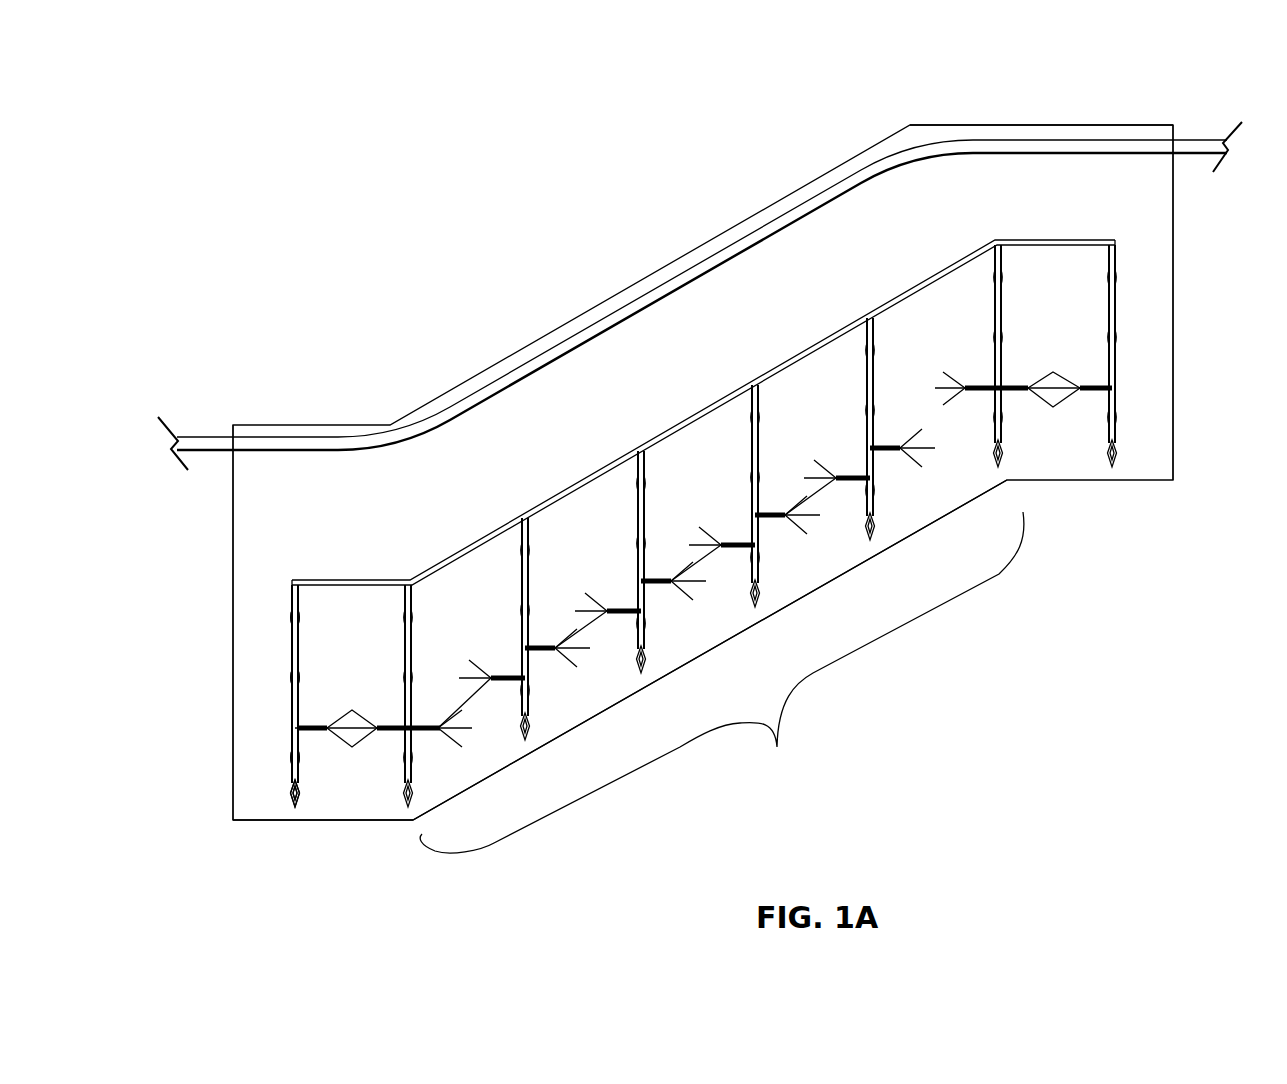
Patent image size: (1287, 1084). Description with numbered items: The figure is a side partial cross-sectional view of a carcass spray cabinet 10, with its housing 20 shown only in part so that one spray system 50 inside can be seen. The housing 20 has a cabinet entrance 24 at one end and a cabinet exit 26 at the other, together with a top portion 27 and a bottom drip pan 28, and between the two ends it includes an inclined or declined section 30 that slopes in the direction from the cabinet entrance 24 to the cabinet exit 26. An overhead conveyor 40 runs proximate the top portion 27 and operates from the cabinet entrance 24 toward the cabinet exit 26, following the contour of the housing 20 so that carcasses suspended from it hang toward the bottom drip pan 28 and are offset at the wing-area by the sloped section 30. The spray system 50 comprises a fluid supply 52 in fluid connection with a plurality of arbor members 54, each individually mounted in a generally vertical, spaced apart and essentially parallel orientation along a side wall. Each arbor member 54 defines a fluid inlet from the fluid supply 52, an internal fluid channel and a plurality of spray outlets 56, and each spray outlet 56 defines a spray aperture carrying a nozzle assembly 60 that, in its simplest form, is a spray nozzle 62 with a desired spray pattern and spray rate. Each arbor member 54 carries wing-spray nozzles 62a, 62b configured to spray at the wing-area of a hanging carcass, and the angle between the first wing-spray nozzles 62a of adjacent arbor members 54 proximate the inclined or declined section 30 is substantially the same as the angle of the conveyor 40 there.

The carcass spray cabinet 10 is at (482, 112).
The housing 20 is at (792, 377).
The cabinet entrance 24 is at (235, 658).
The cabinet exit 26 is at (1175, 340).
The top portion 27 is at (953, 123).
The bottom drip pan 28 is at (378, 823).
The inclined or declined section 30 is at (718, 666).
The conveyor 40 is at (293, 443).
The spray system 50 is at (625, 435).
The fluid supply 52 is at (947, 272).
The arbor member 54 is at (297, 660).
The spray outlet 56 is at (293, 708).
The nozzle assembly 60 is at (389, 705).
The spray nozzle 62 is at (512, 675).
The first wing-spray nozzle 62a is at (630, 606).
The second wing-spray nozzle 62b is at (312, 737).